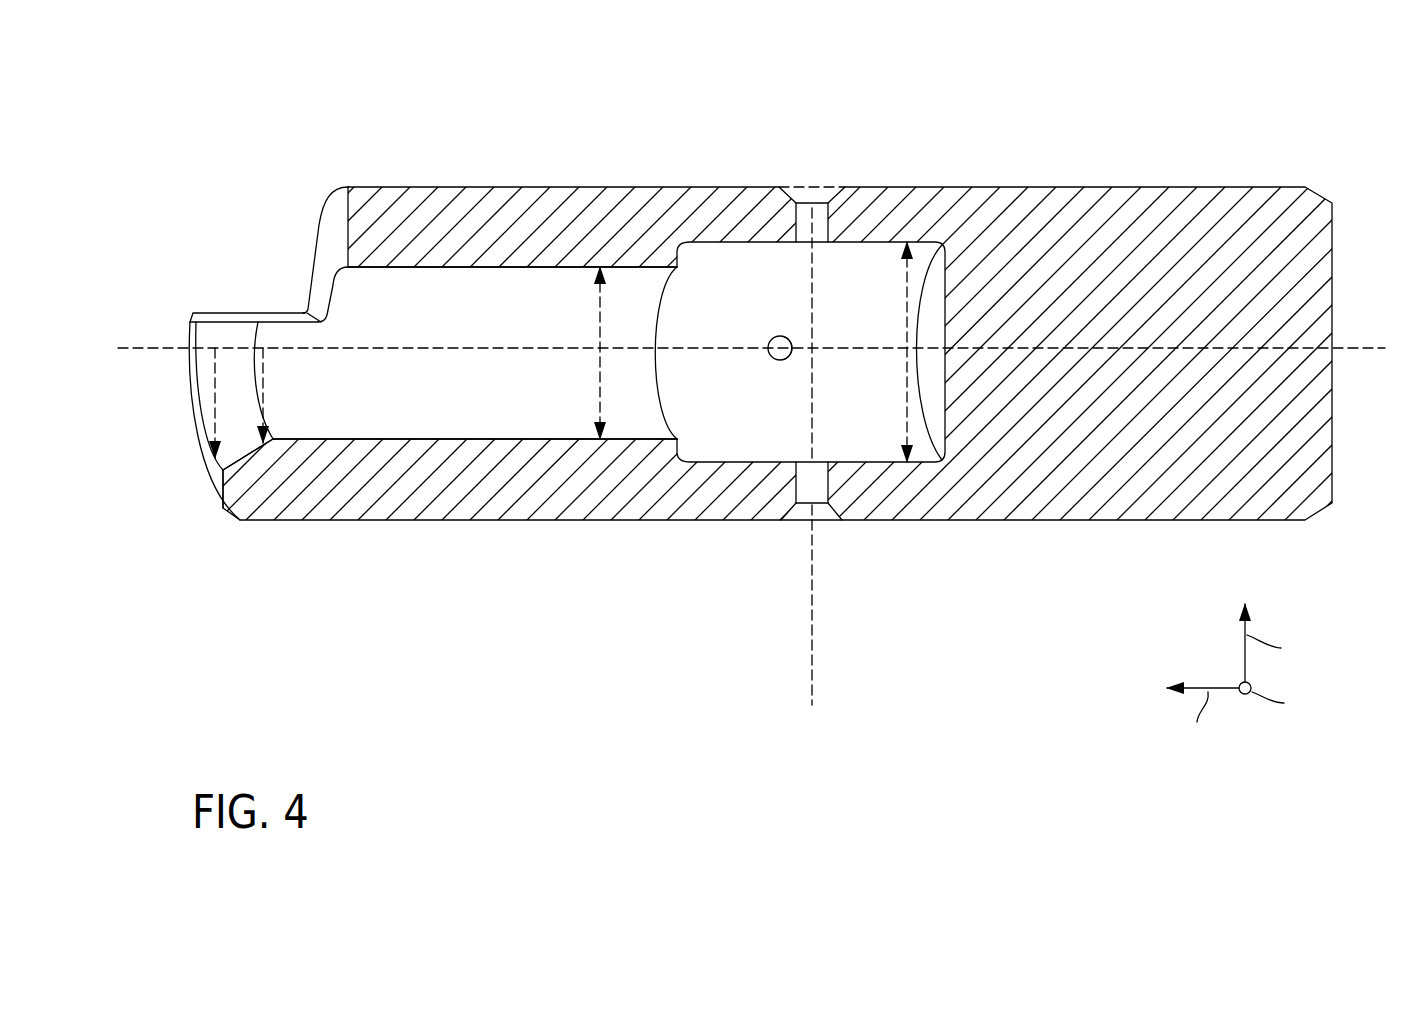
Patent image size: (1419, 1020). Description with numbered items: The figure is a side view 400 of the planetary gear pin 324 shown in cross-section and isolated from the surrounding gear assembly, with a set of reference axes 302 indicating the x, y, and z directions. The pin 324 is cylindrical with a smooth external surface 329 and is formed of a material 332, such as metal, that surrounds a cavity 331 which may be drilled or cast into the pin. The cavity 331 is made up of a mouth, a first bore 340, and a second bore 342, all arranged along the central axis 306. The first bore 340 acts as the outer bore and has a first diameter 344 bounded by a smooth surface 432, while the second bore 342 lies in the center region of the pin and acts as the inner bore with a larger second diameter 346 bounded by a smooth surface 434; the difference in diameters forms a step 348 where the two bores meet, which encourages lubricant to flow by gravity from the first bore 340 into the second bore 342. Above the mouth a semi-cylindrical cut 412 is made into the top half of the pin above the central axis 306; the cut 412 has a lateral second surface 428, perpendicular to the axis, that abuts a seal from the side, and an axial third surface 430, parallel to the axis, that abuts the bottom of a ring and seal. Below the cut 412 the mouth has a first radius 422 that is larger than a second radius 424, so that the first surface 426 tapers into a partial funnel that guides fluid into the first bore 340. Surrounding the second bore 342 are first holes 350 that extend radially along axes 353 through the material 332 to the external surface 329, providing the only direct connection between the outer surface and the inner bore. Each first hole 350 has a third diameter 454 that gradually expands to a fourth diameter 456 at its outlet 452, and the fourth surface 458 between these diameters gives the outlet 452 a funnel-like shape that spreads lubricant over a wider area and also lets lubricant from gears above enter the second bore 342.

The side view 400 is at (322, 122).
The pin 324 is at (1095, 150).
The external surface 329 is at (563, 187).
The second surface 428 is at (343, 203).
The cut 412 is at (298, 302).
The surface 432 is at (474, 267).
The surface 434 is at (697, 240).
The fourth surface 458 is at (795, 203).
The fourth diameter 456 is at (811, 183).
The outlet 452 is at (823, 189).
The third diameter 454 is at (795, 212).
The first holes 350 is at (822, 210).
The material 332 is at (199, 342).
The third surface 430 is at (218, 313).
The first diameter 344 is at (597, 312).
The second bore 342 is at (720, 312).
The second diameter 346 is at (903, 416).
The central axis 306 is at (1347, 343).
The first bore 340 is at (453, 401).
The first radius 422 is at (212, 389).
The second radius 424 is at (265, 392).
The cavity 331 is at (205, 424).
The first surface 426 is at (243, 452).
The step 348 is at (682, 456).
The axes 353 is at (808, 652).
The reference axes 302 is at (1195, 642).